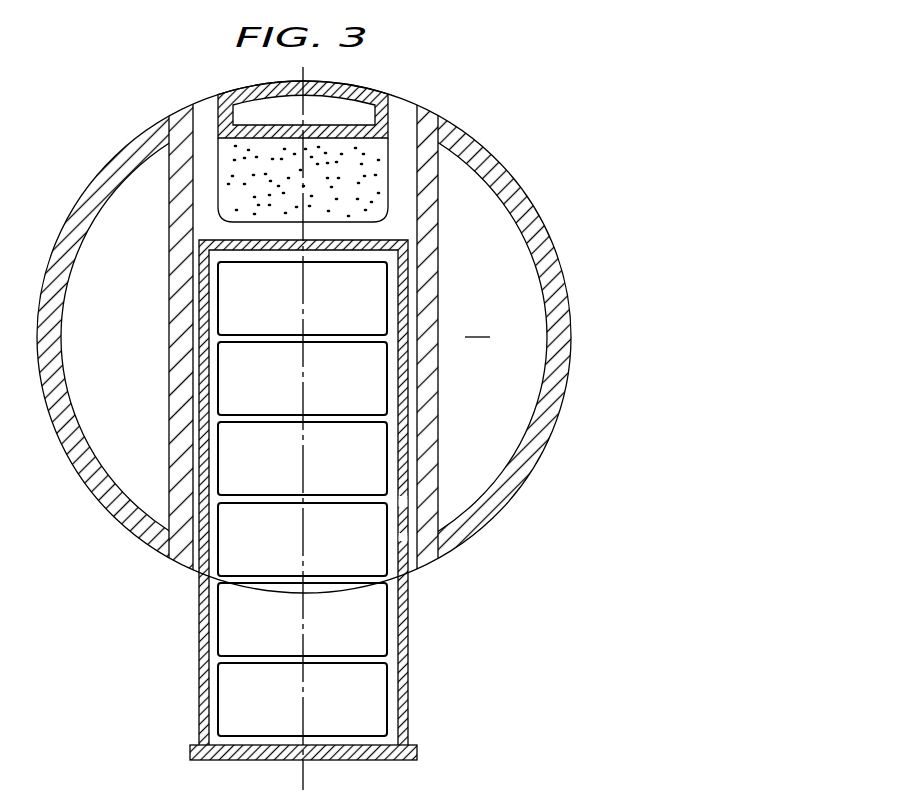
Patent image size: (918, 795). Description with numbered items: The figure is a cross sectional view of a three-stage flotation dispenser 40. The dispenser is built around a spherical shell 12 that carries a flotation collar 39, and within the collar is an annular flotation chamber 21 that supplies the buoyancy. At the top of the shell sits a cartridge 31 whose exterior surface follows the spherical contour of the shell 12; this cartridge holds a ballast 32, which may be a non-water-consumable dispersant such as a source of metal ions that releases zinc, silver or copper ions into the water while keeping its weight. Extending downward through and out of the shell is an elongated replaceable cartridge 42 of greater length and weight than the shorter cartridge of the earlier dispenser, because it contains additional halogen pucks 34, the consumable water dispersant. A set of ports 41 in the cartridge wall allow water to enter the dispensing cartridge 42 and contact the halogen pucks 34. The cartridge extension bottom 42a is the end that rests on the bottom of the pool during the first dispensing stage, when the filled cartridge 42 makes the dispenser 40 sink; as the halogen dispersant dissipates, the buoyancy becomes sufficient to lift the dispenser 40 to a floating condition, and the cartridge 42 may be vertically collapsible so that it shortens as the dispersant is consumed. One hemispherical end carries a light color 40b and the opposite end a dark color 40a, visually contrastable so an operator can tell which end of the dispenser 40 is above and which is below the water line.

The shell 12 is at (369, 337).
The annular flotation chamber 21 is at (482, 323).
The cartridge 31 is at (352, 85).
The ballast 32 is at (345, 165).
The halogen pucks 34 is at (248, 552).
The flotation collar 39 is at (558, 332).
The three-stage flotation dispenser 40 is at (369, 303).
The dark color end 40a is at (563, 402).
The light color end 40b is at (560, 263).
The ports 41 is at (408, 538).
The elongated replaceable cartridge 42 is at (354, 511).
The cartridge extension bottom 42a is at (373, 760).